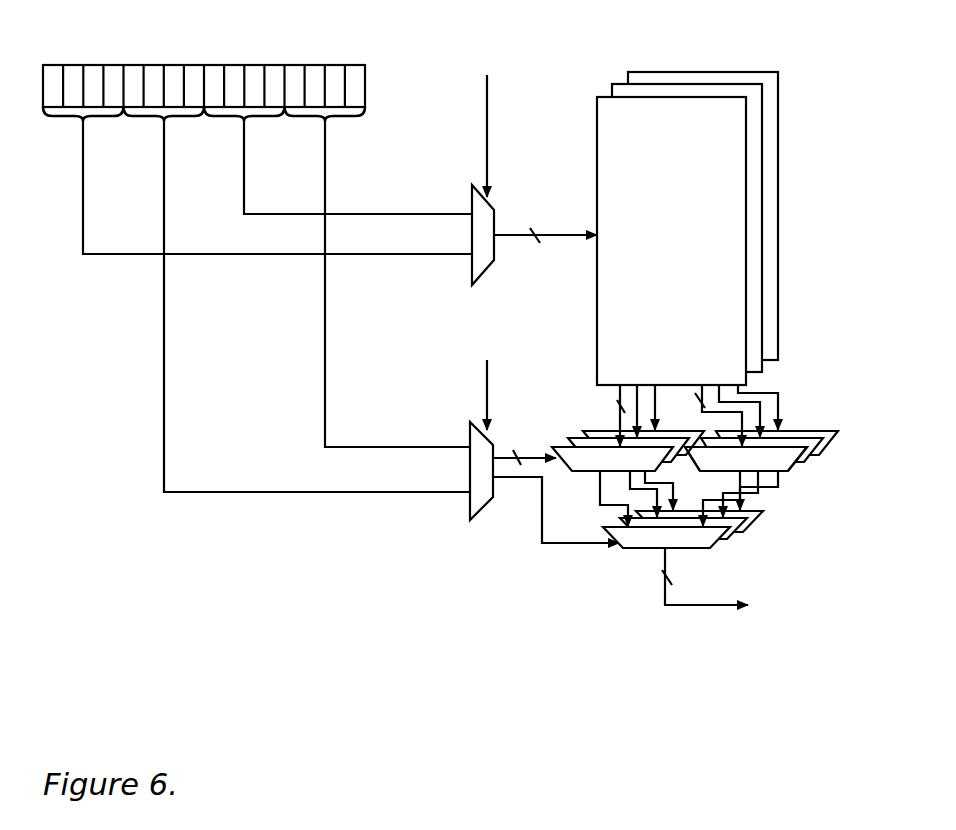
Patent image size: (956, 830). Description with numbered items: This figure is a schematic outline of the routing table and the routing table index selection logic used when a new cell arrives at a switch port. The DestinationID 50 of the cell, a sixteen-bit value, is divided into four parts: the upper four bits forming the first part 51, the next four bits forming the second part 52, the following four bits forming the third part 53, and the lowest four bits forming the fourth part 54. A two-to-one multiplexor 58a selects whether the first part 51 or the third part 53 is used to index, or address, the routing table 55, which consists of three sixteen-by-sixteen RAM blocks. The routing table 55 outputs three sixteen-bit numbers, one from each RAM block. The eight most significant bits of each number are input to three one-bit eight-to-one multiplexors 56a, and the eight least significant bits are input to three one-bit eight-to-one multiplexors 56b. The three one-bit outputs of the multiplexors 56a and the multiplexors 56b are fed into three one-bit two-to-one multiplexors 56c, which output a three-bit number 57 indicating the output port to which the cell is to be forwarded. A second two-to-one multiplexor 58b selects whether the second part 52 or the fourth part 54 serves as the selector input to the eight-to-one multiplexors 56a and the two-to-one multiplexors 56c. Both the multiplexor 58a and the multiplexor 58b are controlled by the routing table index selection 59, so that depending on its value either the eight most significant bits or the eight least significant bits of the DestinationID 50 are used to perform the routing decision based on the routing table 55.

The DestinationID 50 is at (218, 67).
The DestinationID[15:12] 51 is at (262, 187).
The DestinationID[11:8] 52 is at (301, 306).
The DestinationID[7:4] 53 is at (342, 167).
The DestinationID[3:0] 54 is at (380, 284).
The routing table 55 is at (687, 228).
The 8:1 multiplexors 56a is at (602, 432).
The 8:1 multiplexors 56b is at (800, 432).
The 2:1 multiplexors 56c is at (762, 512).
The 3-bit number 57 is at (772, 592).
The 2:1 multiplexor 58a is at (479, 190).
The 2:1 multiplexor 58b is at (478, 428).
The routing table index selection (RTISEL) 59 is at (503, 238).